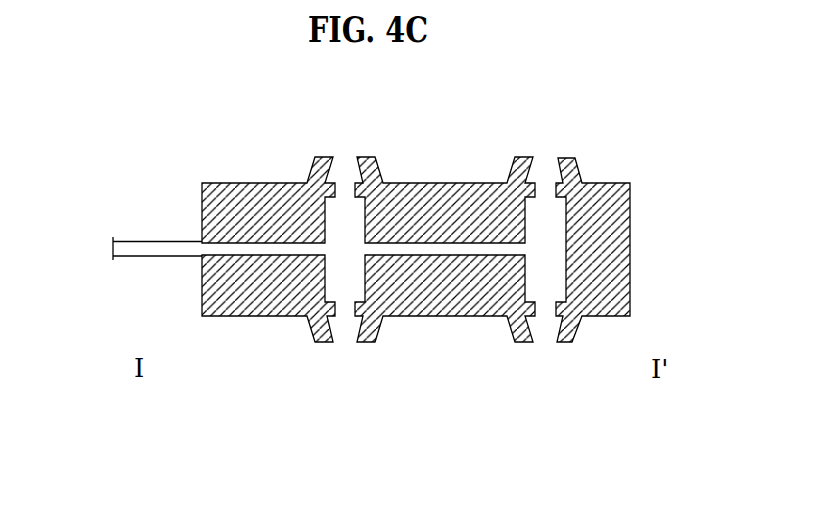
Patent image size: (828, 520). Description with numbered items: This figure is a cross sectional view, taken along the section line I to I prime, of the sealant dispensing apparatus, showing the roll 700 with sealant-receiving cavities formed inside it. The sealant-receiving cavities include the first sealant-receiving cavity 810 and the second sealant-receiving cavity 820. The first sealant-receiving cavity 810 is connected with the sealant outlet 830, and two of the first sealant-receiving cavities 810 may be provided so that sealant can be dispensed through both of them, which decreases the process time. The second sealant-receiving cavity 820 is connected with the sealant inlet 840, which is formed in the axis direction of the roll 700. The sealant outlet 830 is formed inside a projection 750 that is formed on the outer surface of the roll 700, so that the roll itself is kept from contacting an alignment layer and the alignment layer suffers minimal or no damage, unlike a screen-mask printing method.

The roll 700 is at (617, 227).
The projection 750 is at (368, 157).
The first sealant-receiving cavity 810 is at (343, 290).
The second sealant-receiving cavity 820 is at (452, 255).
The sealant outlet 830 is at (545, 172).
The sealant inlet 840 is at (149, 250).